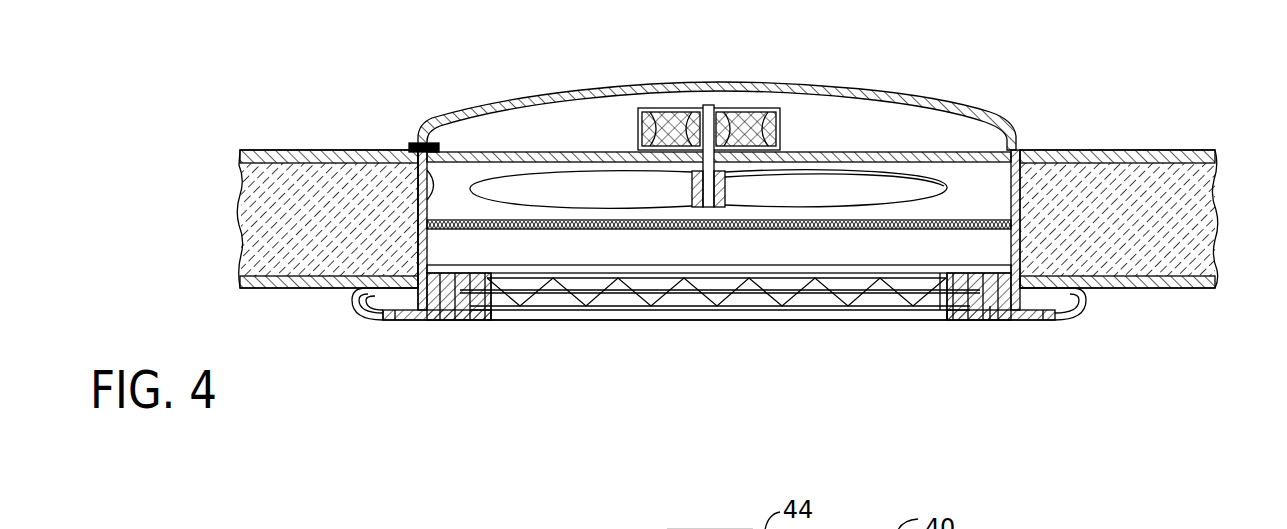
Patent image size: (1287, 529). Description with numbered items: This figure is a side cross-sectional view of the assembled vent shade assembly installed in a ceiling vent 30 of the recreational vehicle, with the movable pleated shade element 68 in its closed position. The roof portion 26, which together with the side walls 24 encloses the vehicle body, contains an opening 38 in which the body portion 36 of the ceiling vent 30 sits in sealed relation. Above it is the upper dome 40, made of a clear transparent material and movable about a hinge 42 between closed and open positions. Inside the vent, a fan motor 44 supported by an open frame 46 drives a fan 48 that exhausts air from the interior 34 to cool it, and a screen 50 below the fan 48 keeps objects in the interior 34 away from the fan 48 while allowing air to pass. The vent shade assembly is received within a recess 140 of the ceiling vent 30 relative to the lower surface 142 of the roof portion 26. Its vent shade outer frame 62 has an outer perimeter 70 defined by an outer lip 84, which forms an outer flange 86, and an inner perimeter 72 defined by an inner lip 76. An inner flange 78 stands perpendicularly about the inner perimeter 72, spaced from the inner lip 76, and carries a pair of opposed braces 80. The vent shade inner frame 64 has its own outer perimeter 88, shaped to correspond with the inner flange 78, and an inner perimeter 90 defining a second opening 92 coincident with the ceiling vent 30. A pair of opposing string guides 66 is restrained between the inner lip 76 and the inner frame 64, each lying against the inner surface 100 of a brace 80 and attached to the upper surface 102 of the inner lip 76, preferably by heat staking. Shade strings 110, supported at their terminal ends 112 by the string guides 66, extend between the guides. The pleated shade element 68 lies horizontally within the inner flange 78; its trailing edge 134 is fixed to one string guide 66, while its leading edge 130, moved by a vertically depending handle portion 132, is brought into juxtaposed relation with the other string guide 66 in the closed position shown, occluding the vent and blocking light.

The side walls 24 is at (935, 292).
The roof portion 26 is at (1180, 185).
The ceiling vent 30 is at (962, 150).
The interior 34 is at (633, 430).
The body portion 36 is at (1022, 244).
The opening 38 is at (1035, 152).
The upper dome 40 is at (897, 95).
The hinge 42 is at (418, 146).
The fan motor 44 is at (775, 108).
The open frame 46 is at (566, 153).
The fan 48 is at (790, 186).
The screen 50 is at (447, 213).
The vent shade outer frame 62 is at (381, 320).
The vent shade inner frame 64 is at (452, 275).
The string guides 66 is at (458, 315).
The movable pleated shade element 68 is at (702, 307).
The outer perimeter 70 is at (493, 424).
The inner perimeter 72 is at (947, 302).
The inner lip 76 is at (973, 308).
The inner flange 78 is at (617, 300).
The opposed braces 80 is at (372, 316).
The outer lip 84 is at (393, 322).
The outer flange 86 is at (362, 305).
The outer perimeter 88 is at (358, 291).
The inner perimeter 90 is at (490, 274).
The second opening 92 is at (810, 297).
The inner surface 100 is at (977, 303).
The upper surface 102 is at (478, 298).
The shade strings 110 is at (747, 296).
The terminal ends 112 is at (450, 297).
The leading edge 130 is at (893, 313).
The handle portion 132 is at (950, 292).
The trailing edge 134 is at (523, 290).
The recess 140 is at (432, 190).
The lower surface 142 is at (1182, 287).